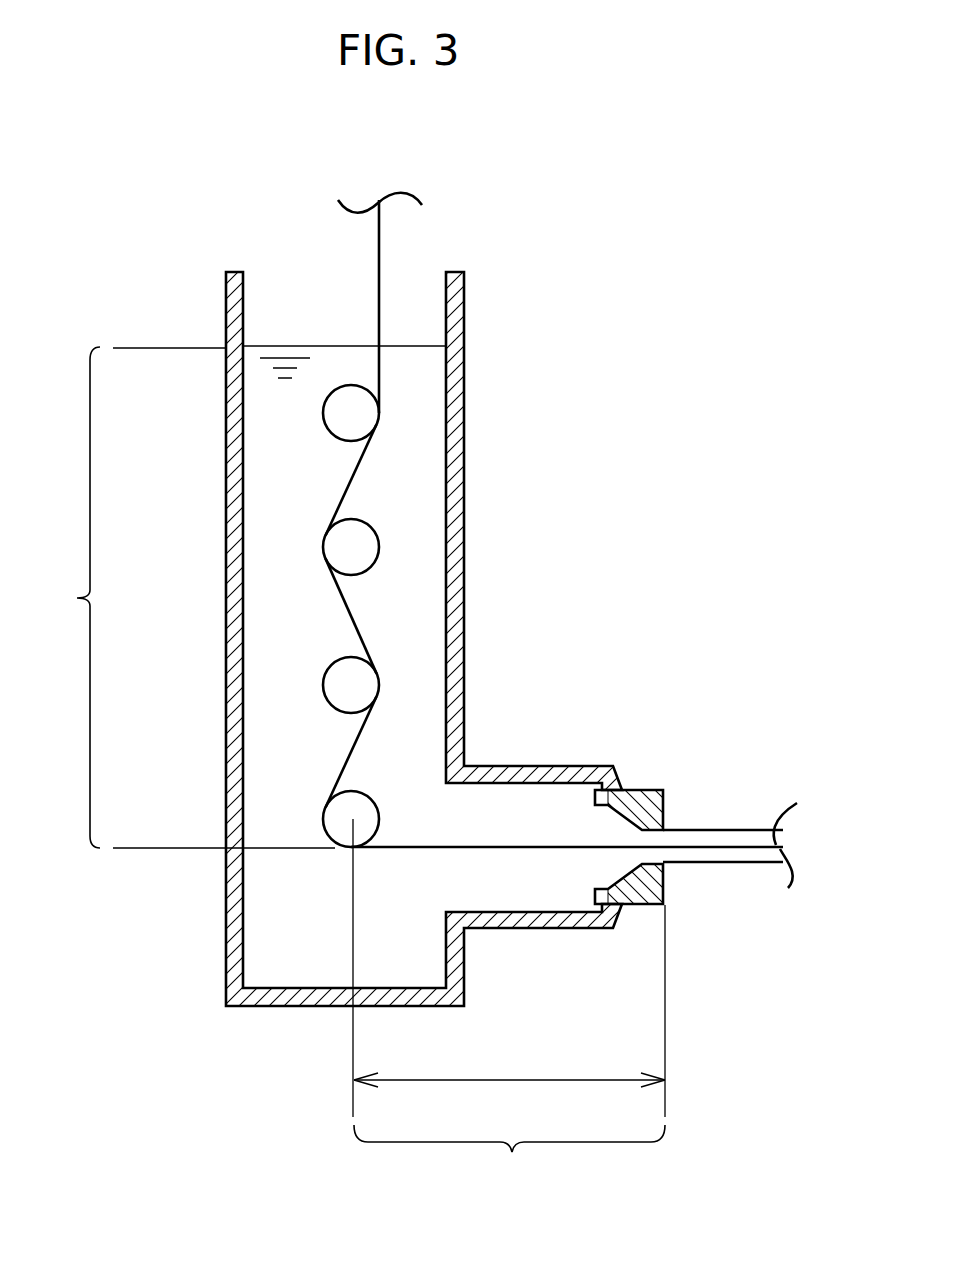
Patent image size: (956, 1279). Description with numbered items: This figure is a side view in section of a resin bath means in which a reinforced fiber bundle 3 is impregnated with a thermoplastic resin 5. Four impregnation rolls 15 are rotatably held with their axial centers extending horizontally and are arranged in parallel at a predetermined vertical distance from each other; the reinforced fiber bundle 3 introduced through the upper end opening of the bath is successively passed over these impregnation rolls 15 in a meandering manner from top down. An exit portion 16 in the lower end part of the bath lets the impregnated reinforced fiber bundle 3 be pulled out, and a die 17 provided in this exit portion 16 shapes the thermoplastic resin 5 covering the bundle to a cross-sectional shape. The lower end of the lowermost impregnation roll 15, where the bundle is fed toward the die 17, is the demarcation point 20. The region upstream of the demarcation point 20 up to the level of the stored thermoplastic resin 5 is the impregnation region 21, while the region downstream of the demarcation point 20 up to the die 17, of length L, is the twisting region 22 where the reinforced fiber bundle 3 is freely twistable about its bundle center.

The reinforced fiber bundle 3 is at (379, 242).
The thermoplastic resin 5 is at (282, 345).
The impregnation rolls 15 is at (381, 544).
The exit portion 16 is at (540, 766).
The die 17 is at (647, 790).
The demarcation point 20 is at (337, 855).
The impregnation region 21 is at (184, 597).
The twisting region 22 is at (509, 1002).